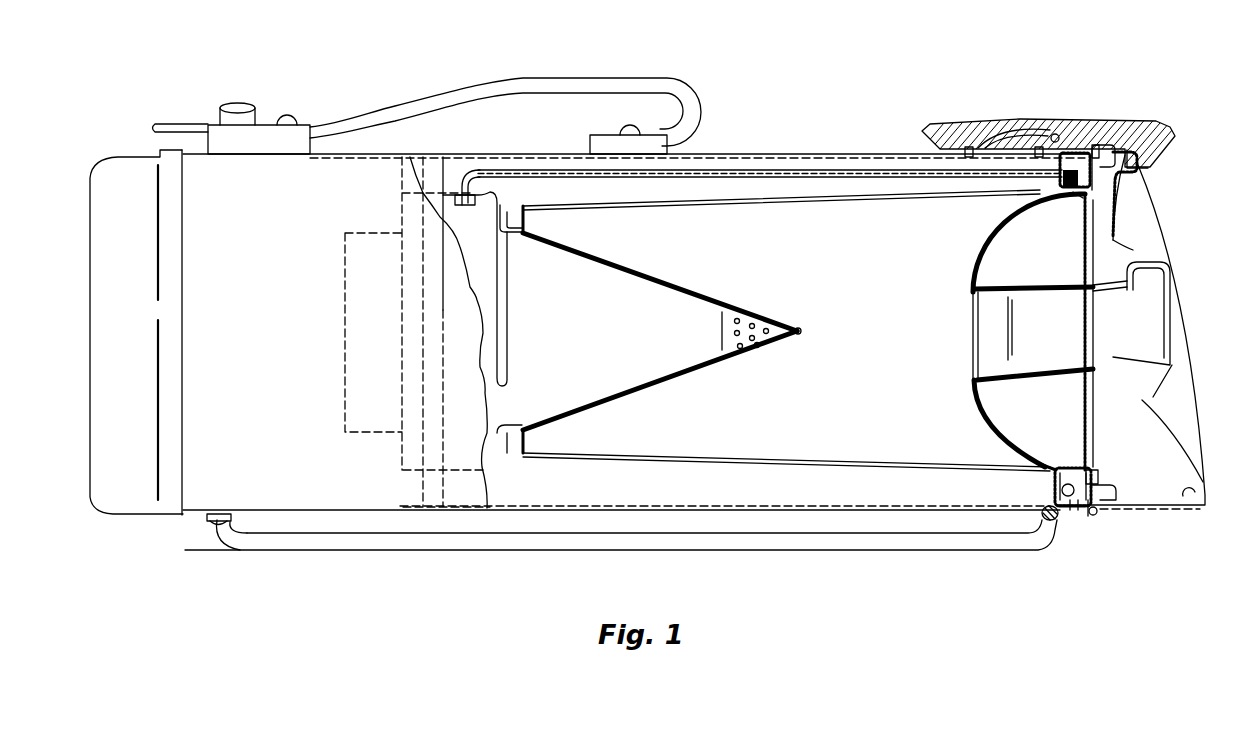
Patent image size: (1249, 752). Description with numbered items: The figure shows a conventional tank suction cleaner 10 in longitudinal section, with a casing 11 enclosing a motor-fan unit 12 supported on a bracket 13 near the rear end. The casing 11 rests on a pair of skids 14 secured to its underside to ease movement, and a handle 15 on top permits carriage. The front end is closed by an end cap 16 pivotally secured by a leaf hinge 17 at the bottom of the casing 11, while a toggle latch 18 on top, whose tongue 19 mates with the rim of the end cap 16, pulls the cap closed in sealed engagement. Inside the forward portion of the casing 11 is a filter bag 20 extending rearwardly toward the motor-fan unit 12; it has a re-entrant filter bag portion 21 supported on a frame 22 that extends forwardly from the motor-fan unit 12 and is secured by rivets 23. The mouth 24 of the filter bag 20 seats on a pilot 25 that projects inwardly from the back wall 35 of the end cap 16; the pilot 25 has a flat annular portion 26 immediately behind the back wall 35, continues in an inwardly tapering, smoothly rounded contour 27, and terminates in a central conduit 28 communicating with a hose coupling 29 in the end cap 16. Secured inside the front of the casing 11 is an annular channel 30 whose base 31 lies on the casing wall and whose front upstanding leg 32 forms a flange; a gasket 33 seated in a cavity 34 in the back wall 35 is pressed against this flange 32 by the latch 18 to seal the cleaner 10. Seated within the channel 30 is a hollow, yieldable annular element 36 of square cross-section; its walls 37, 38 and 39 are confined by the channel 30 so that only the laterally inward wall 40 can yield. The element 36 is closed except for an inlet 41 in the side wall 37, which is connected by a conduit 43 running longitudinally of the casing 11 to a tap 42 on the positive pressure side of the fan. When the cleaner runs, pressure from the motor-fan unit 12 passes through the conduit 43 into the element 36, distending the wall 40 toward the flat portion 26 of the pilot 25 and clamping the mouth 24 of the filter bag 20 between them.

The tank cleaner 10 is at (246, 207).
The casing 11 is at (782, 150).
The motor-fan unit 12 is at (486, 231).
The bracket 13 is at (425, 177).
The skids 14 is at (485, 548).
The handle 15 is at (510, 85).
The end cap 16 is at (1133, 213).
The leaf hinge 17 is at (1092, 514).
The toggle latch 18 is at (1042, 120).
The tongue 19 is at (1150, 158).
The filter bag 20 is at (770, 196).
The re-entrant filter bag portion 21 is at (685, 292).
The frame 22 is at (573, 408).
The rivets 23 is at (503, 225).
The mouth 24 is at (1073, 192).
The pilot 25 is at (973, 262).
The flat annular portion 26 is at (1083, 468).
The rounded contour wall 27 is at (990, 433).
The conduit 28 is at (1063, 366).
The hose coupling 29 is at (1162, 318).
The annular channel 30 is at (1046, 485).
The base 31 is at (1062, 513).
The front upstanding leg 32 is at (1097, 492).
The gasket 33 is at (1097, 181).
The cavity 34 is at (1100, 186).
The back wall 35 is at (1088, 435).
The yieldable element 36 is at (1057, 490).
The side wall 37 is at (1070, 511).
The wall 38 is at (1078, 511).
The wall 39 is at (1083, 465).
The wall 40 is at (1052, 468).
The inlet 41 is at (1083, 200).
The tap 42 is at (455, 189).
The conduit 43 is at (710, 172).